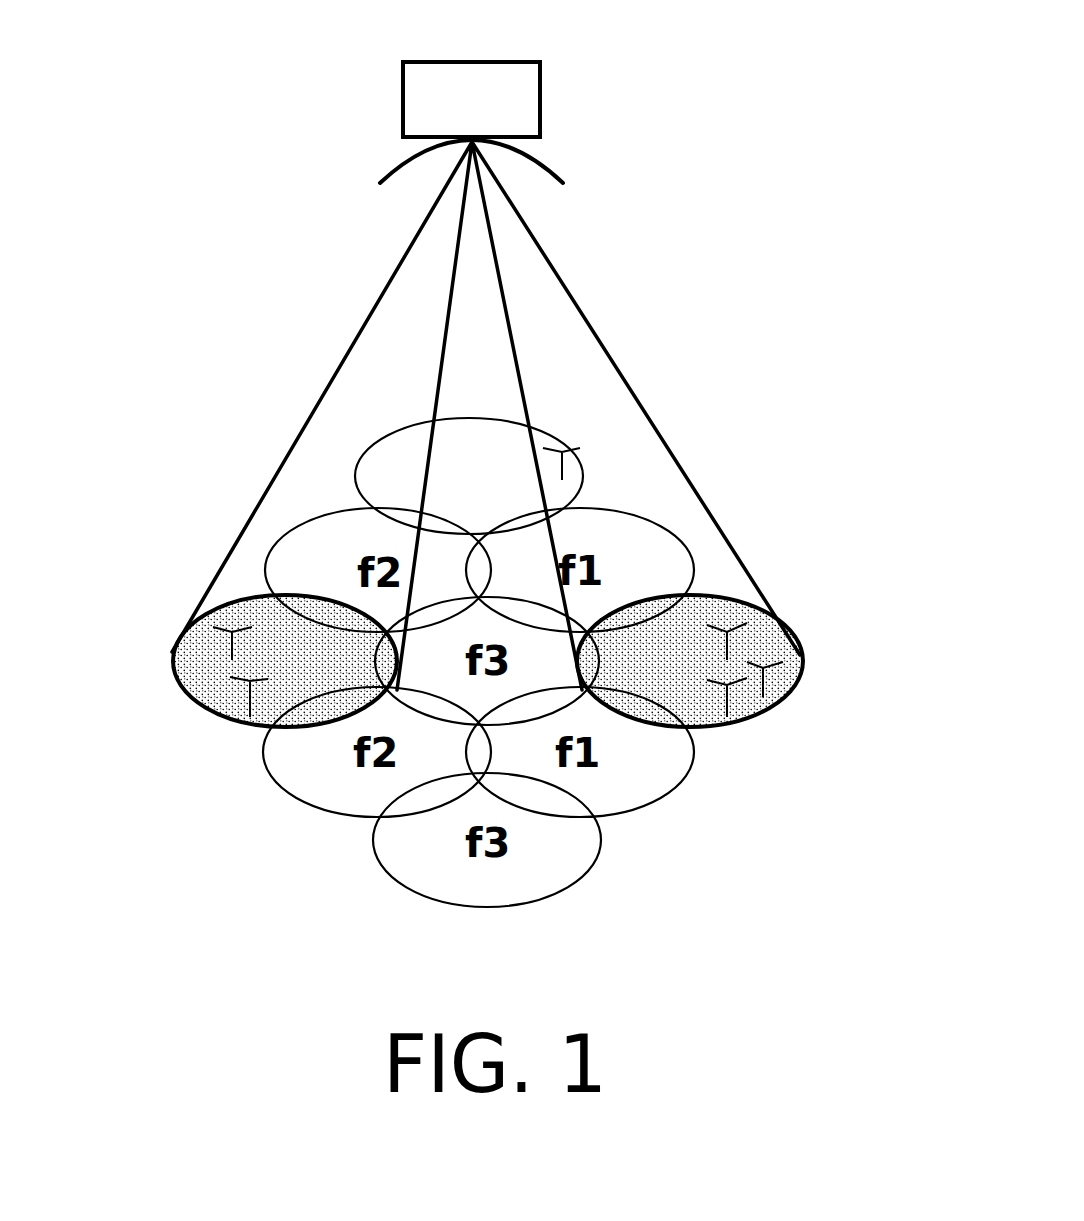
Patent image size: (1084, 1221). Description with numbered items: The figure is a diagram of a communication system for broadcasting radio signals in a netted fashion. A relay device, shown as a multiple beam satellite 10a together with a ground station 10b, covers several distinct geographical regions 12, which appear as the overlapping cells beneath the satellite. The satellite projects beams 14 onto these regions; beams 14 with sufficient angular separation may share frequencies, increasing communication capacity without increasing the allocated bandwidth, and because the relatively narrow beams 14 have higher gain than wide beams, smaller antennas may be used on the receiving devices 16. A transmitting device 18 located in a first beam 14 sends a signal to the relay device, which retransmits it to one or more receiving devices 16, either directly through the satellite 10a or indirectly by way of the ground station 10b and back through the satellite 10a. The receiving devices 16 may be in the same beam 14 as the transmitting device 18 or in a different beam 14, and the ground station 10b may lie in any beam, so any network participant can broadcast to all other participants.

The multiple beam satellite 10a is at (468, 62).
The ground station 10b is at (577, 430).
The geographical regions 12 is at (240, 722).
The beams 14 is at (322, 392).
The receiving devices 16 is at (777, 658).
The transmitting device 18 is at (217, 627).